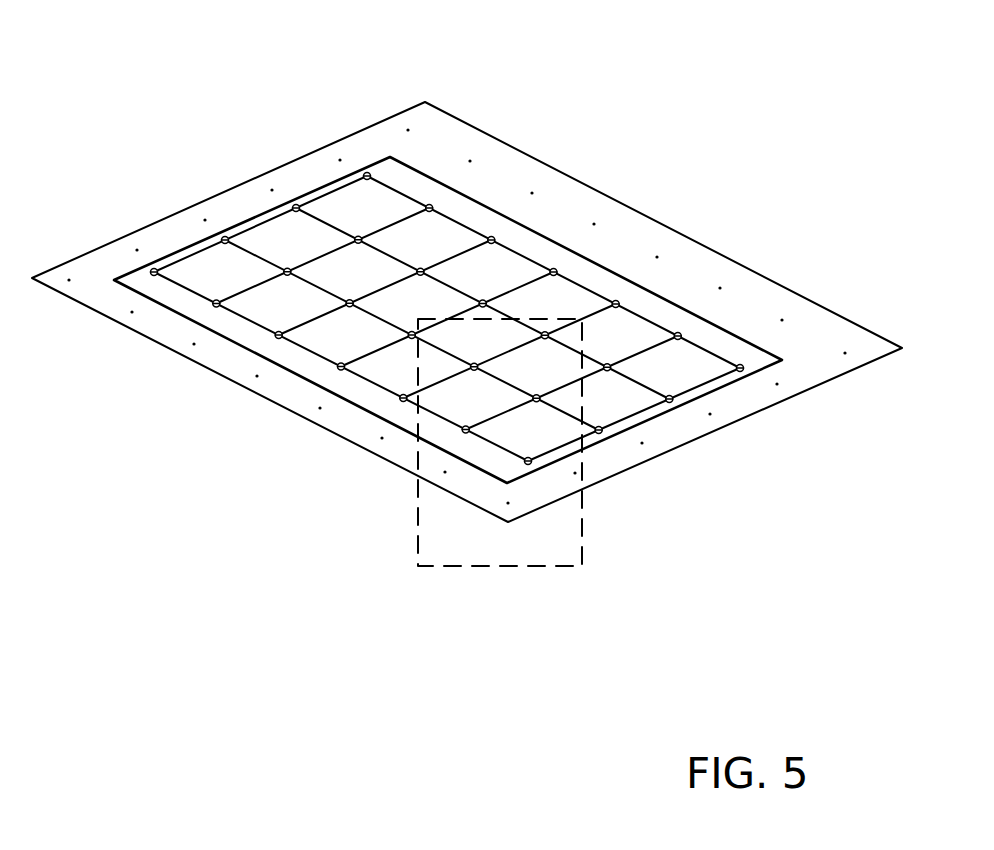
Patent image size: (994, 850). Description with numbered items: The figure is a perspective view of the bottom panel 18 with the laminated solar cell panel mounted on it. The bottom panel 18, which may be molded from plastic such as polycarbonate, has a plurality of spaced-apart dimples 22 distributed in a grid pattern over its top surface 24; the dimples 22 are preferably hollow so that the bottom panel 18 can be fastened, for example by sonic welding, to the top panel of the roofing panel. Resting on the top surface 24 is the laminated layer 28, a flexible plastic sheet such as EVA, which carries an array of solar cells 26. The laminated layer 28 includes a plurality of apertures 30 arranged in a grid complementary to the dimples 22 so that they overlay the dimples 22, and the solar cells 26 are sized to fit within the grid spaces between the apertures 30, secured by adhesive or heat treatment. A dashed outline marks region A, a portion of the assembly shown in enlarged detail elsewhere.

The bottom panel 18 is at (650, 213).
The dimples 22 is at (530, 464).
The top surface 24 is at (740, 313).
The solar cells 26 is at (505, 263).
The laminated layer 28 is at (478, 218).
The apertures 30 is at (342, 371).
The detail region A is at (570, 570).